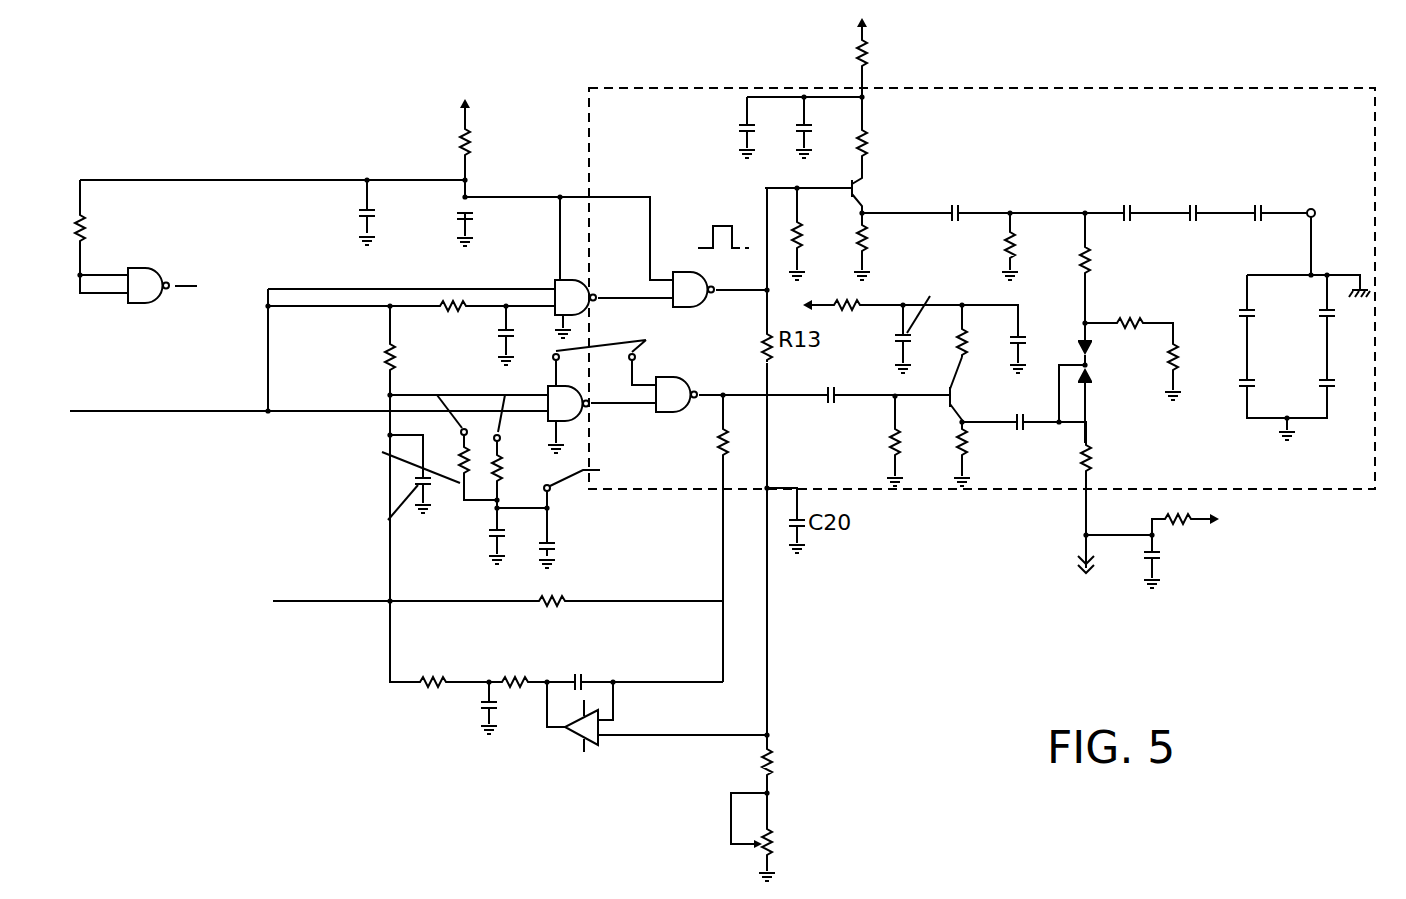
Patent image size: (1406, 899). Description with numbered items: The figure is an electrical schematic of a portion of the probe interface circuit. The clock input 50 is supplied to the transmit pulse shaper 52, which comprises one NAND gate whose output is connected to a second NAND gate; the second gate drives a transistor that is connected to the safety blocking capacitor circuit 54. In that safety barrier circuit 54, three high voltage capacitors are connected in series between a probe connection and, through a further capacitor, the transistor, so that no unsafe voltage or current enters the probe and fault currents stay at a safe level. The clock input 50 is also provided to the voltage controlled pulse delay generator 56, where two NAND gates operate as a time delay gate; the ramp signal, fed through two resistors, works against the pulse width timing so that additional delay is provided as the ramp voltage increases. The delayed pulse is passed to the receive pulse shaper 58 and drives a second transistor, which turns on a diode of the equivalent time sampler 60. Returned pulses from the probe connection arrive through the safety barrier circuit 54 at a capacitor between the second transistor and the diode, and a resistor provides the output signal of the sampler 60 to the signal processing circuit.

The pulse repetition clock input 50 is at (164, 382).
The transmit pulse shaper 52 is at (684, 158).
The safety blocking capacitor circuit 54 is at (1243, 152).
The voltage controlled pulse delay generator 56 is at (690, 497).
The receive pulse shaper 58 is at (990, 504).
The equivalent time sampler 60 is at (1114, 414).